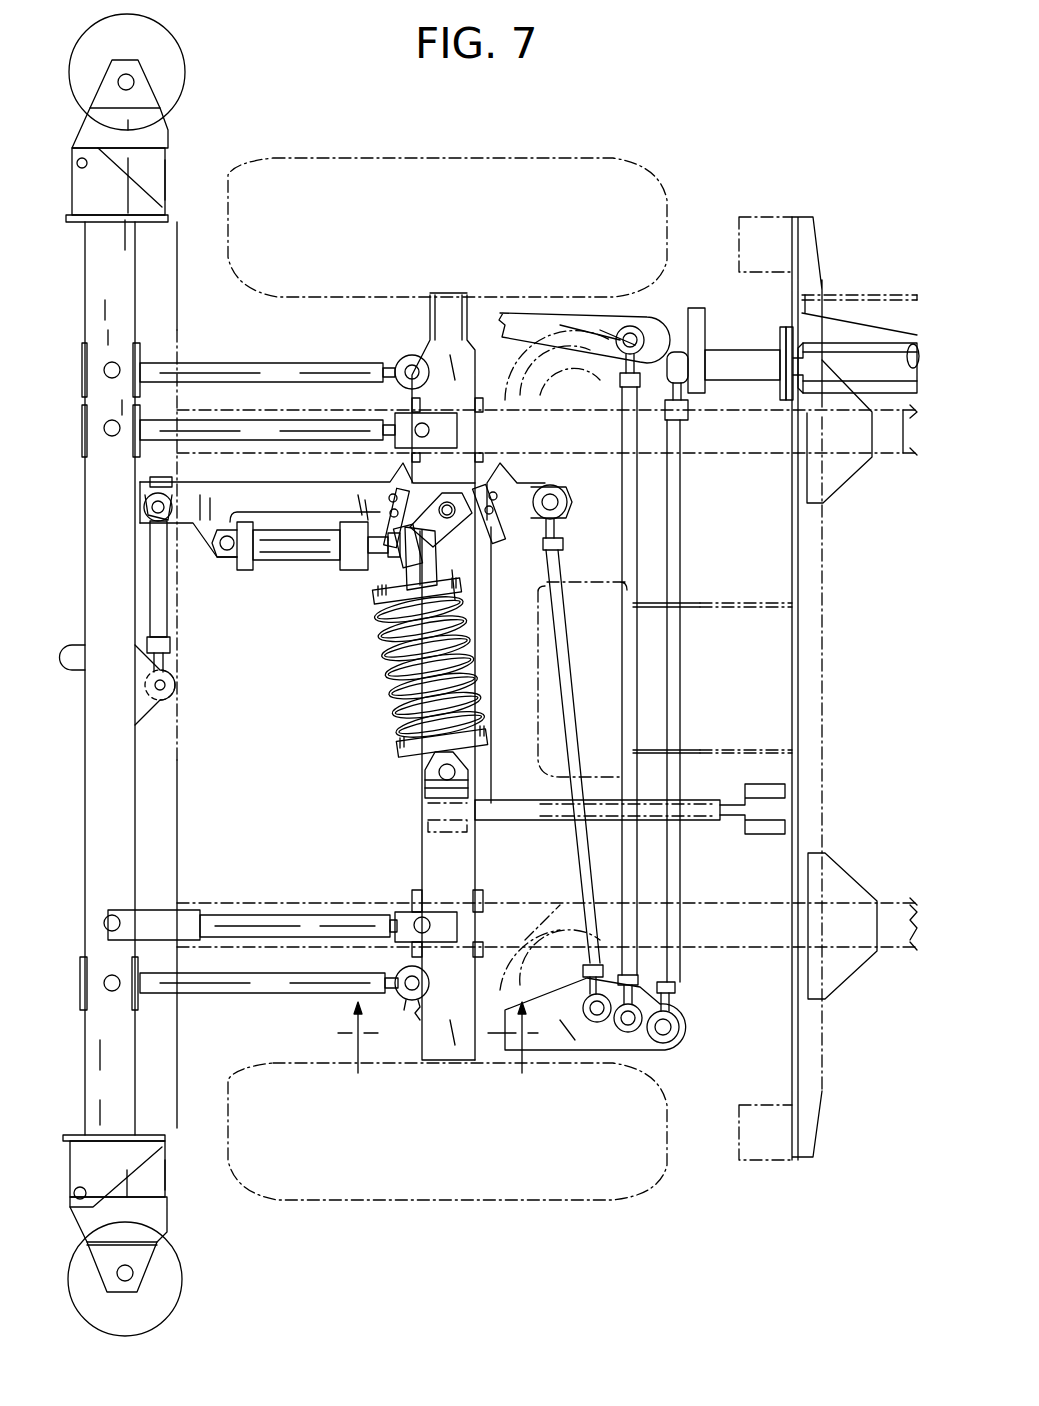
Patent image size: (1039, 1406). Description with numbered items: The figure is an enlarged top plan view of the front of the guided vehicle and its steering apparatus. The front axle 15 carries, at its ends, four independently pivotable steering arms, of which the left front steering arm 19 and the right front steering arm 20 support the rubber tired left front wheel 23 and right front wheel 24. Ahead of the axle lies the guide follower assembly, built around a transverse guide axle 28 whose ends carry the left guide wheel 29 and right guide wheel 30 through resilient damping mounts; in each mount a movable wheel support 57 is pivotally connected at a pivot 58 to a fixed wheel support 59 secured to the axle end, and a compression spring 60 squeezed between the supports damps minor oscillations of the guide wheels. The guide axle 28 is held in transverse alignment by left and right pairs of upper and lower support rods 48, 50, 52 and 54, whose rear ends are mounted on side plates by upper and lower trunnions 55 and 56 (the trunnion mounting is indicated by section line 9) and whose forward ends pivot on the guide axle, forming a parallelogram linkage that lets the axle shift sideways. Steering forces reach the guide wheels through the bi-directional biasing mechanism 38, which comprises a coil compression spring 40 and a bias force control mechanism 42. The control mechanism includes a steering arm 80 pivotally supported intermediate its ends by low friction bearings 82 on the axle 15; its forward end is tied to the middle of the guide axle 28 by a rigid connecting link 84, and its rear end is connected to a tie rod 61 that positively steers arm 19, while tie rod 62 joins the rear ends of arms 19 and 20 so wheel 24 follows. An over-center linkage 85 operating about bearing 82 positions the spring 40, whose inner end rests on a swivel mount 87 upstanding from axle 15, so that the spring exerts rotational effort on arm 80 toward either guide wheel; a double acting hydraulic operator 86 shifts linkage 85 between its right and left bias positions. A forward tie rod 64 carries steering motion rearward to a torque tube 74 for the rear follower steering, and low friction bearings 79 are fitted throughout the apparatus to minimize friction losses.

The section line 9- 9 is at (435, 1037).
The front axle 15 is at (428, 853).
The left front steering arm 19 is at (662, 1052).
The right front steering arm 20 is at (645, 315).
The left front wheel 23 is at (633, 1196).
The right front wheel 24 is at (615, 165).
The guide axle 28 is at (85, 742).
The left guide wheel 29 is at (185, 1296).
The right guide wheel 30 is at (178, 65).
The bi-directional biasing mechanism 38 is at (330, 588).
The coil compression spring 40 is at (388, 693).
The bias force control mechanism 42 is at (452, 568).
The support rod 48 is at (245, 994).
The support rod 50 is at (248, 915).
The support rod 52 is at (282, 443).
The support rod 54 is at (253, 363).
The upper trunnion 55 is at (400, 912).
The lower trunnion 56 is at (408, 1002).
The movable wheel support 57 is at (150, 98).
The pivot 58 is at (77, 168).
The fixed wheel support 59 is at (112, 199).
The compression spring 60 is at (165, 180).
The tie rod 61 is at (570, 655).
The tie rod 62 is at (620, 555).
The forward tie rod 64 is at (688, 512).
The torque tube 74 is at (735, 352).
The low friction bearings 79 is at (625, 328).
The steering arm 80 is at (352, 482).
The low friction bearings 82 is at (455, 518).
The rigid connecting link 84 is at (170, 603).
The over-center linkage 85 is at (380, 578).
The bi-directional reciprocative operator 86 is at (283, 568).
The swivel mount 87 is at (425, 773).